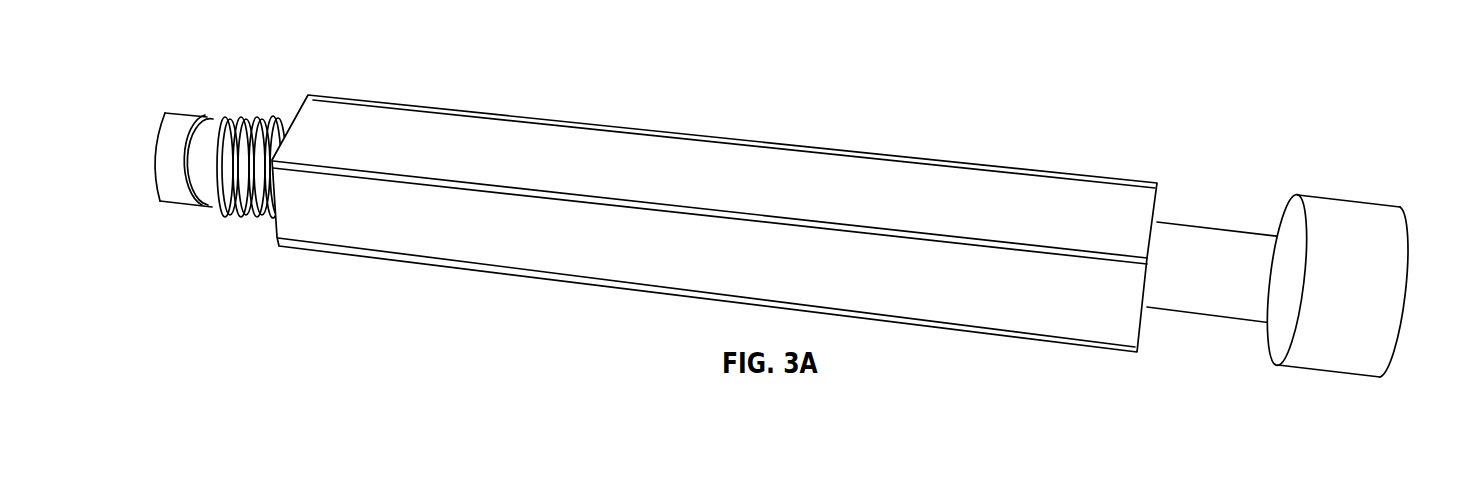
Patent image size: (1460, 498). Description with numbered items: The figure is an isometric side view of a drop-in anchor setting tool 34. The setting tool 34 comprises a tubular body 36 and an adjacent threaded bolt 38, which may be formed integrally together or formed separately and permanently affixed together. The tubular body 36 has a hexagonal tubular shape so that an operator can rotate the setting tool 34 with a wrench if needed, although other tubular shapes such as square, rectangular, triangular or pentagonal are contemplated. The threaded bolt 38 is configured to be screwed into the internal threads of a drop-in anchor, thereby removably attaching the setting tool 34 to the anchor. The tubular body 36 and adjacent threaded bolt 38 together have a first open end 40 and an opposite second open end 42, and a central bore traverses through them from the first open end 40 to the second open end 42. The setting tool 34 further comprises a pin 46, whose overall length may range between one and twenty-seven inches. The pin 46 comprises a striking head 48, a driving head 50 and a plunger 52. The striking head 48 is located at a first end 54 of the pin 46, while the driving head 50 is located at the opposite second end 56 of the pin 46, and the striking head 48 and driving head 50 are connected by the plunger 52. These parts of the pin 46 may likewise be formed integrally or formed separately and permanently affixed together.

The drop-in anchor setting tool 34 is at (880, 81).
The tubular body 36 is at (606, 124).
The threaded bolt 38 is at (246, 119).
The first open end 40 is at (1160, 218).
The second open end 42 is at (219, 209).
The pin 46 is at (1212, 318).
The striking head 48 is at (1386, 335).
The driving head 50 is at (184, 118).
The plunger 52 is at (1242, 246).
The first end 54 is at (1371, 388).
The second end 56 is at (147, 157).